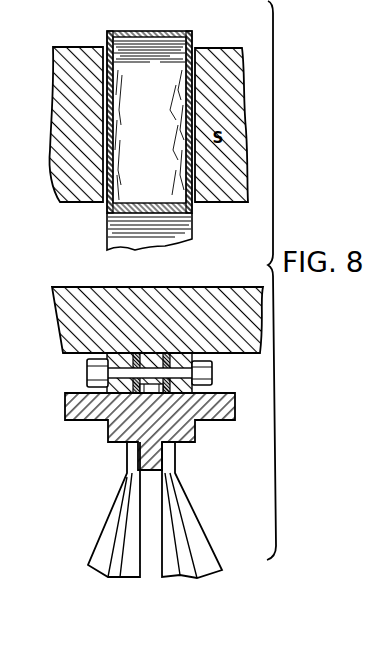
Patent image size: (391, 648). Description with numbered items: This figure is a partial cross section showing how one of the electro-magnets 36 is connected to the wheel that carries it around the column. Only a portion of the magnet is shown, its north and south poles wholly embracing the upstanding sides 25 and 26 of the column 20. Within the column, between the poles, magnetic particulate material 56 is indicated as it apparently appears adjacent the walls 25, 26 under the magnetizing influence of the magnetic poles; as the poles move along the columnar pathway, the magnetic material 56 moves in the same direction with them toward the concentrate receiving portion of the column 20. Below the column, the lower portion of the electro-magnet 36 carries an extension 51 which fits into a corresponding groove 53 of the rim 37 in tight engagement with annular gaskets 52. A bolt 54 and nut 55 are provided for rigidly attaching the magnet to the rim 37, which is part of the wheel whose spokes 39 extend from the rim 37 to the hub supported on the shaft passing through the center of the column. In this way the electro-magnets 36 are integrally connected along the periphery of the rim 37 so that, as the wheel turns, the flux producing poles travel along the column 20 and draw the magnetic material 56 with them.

The column 20 is at (145, 129).
The upstanding side 25 is at (107, 40).
The upstanding side 26 is at (191, 52).
The electro-magnet 36 is at (58, 175).
The magnetic particulate material 56 is at (110, 187).
The annular gasket 52 is at (148, 374).
The extension 51 is at (145, 395).
The groove 53 is at (155, 394).
The bolt 54 is at (86, 371).
The nut 55 is at (206, 362).
The rim 37 is at (90, 404).
The spokes 39 is at (177, 481).